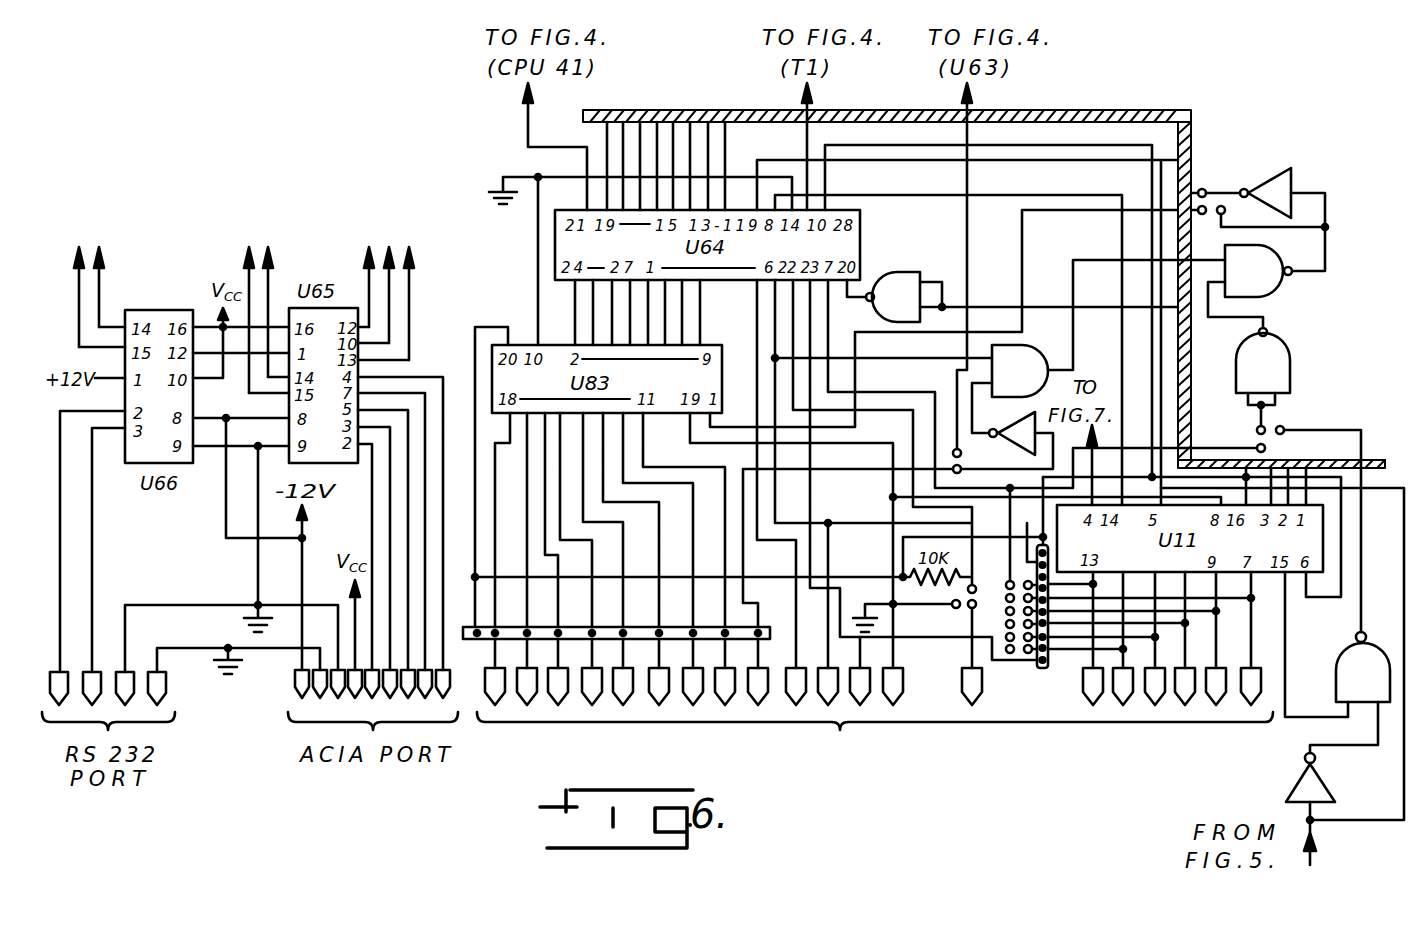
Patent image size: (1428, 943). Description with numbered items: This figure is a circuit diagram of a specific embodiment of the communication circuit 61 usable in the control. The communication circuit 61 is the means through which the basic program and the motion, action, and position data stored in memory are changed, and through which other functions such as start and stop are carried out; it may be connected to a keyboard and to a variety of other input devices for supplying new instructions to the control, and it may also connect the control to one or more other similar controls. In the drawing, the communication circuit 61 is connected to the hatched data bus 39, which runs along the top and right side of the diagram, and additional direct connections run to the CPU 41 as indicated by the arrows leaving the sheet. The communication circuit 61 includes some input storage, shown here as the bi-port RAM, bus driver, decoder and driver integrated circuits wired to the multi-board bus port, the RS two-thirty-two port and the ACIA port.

The data bus 39 is at (1107, 110).
The CPU 41 is at (420, 246).
The communication circuit 61 is at (1079, 768).